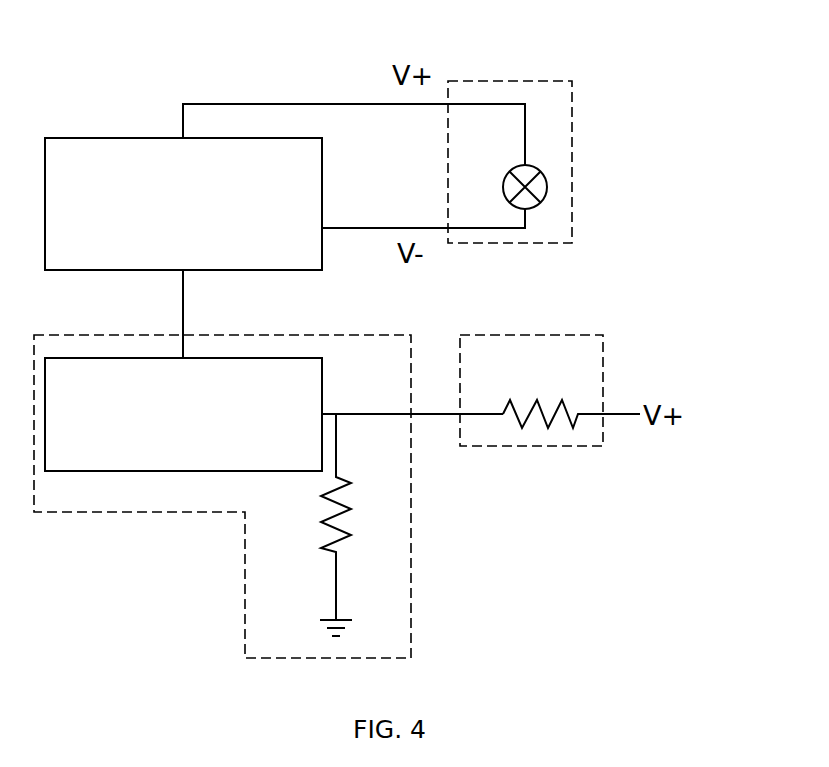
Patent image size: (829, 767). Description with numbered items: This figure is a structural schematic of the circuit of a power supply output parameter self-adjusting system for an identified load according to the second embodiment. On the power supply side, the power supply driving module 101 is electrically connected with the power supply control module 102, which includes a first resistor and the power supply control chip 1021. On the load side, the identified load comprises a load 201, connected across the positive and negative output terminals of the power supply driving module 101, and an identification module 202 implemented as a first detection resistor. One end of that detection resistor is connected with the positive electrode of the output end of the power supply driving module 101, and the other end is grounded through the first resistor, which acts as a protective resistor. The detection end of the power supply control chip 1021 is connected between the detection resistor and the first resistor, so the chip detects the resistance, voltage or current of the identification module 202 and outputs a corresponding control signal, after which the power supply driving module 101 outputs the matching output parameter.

The power supply driving module 101 is at (285, 231).
The power supply control chip 1021 is at (274, 414).
The power supply control module 102 is at (228, 513).
The load 201 is at (512, 82).
The identification module 202 is at (532, 447).